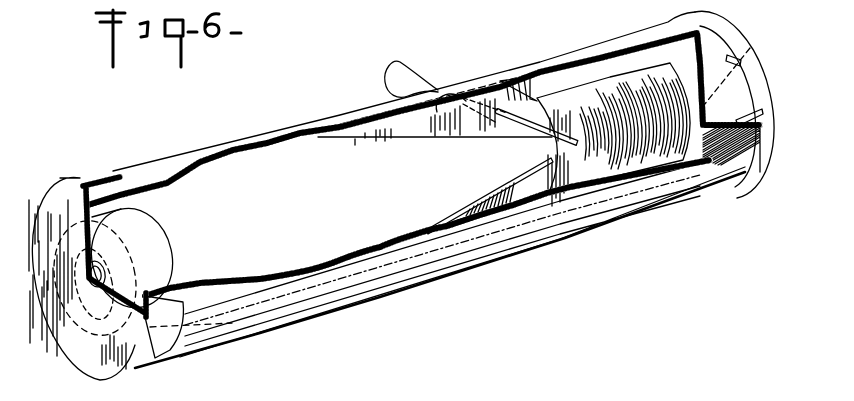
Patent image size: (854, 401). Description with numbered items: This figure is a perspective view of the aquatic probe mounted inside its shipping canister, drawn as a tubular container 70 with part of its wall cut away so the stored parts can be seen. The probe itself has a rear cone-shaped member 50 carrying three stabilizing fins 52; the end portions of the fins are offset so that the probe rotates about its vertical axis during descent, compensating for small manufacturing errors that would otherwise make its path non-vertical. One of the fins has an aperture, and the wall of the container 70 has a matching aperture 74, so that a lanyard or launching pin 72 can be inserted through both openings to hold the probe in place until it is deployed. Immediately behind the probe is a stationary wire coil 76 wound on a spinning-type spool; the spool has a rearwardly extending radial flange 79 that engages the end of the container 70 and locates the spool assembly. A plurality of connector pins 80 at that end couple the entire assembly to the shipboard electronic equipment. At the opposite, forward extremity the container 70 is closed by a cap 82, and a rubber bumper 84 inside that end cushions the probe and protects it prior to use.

The rear cone-shaped member 50 is at (284, 150).
The stabilizing fins 52 is at (560, 71).
The container 70 is at (541, 66).
The launching pin 72 is at (397, 62).
The aperture 74 is at (440, 98).
The stationary wire coil 76 is at (630, 164).
The radial flange 79 is at (738, 197).
The connector pins 80 is at (737, 57).
The cap 82 is at (83, 180).
The rubber bumper 84 is at (150, 248).